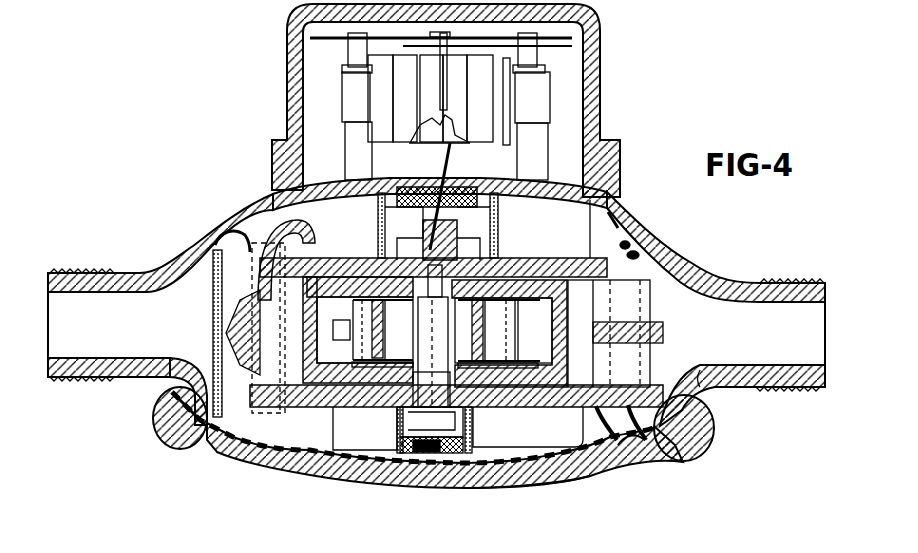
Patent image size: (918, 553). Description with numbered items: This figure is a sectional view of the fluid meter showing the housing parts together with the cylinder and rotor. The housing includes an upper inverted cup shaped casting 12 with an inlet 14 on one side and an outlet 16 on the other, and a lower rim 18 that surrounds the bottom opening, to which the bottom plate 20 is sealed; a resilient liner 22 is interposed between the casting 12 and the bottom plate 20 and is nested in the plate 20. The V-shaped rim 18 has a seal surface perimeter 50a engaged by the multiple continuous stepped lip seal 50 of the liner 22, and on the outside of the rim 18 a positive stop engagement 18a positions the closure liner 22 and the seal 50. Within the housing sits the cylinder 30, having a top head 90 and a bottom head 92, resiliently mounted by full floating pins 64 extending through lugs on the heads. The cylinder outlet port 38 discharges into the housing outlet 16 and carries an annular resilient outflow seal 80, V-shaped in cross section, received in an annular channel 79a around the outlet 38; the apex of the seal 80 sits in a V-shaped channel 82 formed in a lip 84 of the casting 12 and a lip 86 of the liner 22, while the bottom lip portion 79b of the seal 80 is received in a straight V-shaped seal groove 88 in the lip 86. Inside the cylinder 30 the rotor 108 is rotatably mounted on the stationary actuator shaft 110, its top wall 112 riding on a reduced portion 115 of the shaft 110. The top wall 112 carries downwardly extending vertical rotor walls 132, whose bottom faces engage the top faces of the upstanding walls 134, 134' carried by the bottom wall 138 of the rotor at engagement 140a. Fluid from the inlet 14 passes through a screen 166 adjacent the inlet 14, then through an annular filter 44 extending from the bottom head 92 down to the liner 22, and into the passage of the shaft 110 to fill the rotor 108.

The housing casting 12 is at (193, 243).
The inlet 14 is at (128, 380).
The outlet 16 is at (753, 391).
The lower rim 18 is at (168, 388).
The positive stop engagement 18a is at (175, 396).
The bottom plate 20 is at (347, 474).
The resilient liner 22 is at (565, 455).
The cylinder 30 is at (584, 229).
The cylinder outlet port 38 is at (668, 283).
The annular filter 44 is at (482, 442).
The multiple continuous stepped lip seal 50 is at (202, 428).
The seal surface perimeter 50a is at (193, 425).
The full floating pin 64 is at (256, 250).
The annular channel 79a is at (640, 250).
The bottom lip portion 79b is at (655, 460).
The outflow seal 80 is at (630, 244).
The V-shaped channel 82 is at (614, 224).
The lip 84 is at (598, 237).
The lip 86 is at (615, 421).
The seal groove 88 is at (633, 458).
The top head 90 is at (530, 272).
The bottom head 92 is at (500, 395).
The rotor 108 is at (700, 387).
The actuator shaft 110 is at (426, 306).
The top wall 112 is at (358, 272).
The reduced portion 115 is at (505, 258).
The vertical rotor wall 132 is at (315, 296).
The vertical upstanding wall 134 is at (344, 330).
The vertical upstanding wall 134' is at (652, 333).
The bottom wall 138 is at (355, 375).
The engagement 140a is at (640, 290).
The screen 166 is at (210, 312).